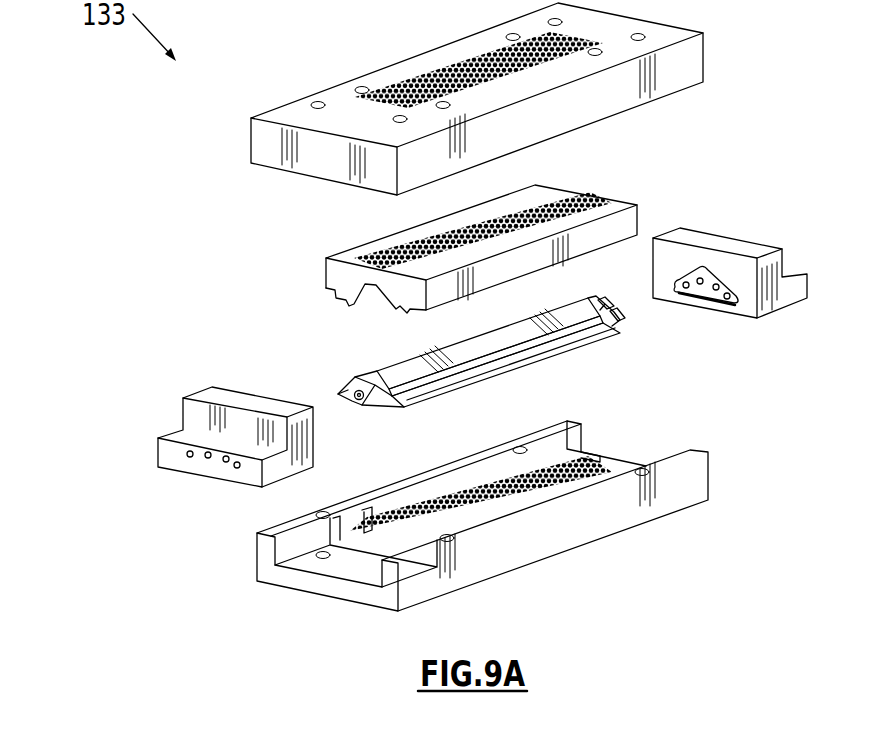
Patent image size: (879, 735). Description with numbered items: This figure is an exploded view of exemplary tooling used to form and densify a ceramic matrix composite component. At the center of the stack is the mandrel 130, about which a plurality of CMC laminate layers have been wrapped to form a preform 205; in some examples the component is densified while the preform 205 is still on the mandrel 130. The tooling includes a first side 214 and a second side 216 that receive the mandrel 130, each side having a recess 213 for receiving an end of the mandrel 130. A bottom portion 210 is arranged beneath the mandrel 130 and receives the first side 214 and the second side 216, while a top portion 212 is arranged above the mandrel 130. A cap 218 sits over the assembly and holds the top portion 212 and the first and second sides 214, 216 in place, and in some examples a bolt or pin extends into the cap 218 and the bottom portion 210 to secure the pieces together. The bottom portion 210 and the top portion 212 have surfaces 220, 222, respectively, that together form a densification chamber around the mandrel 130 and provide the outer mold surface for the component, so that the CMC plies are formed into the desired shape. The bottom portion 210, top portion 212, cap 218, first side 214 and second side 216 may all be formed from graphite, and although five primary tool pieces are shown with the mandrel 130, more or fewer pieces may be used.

The cap 218 is at (689, 67).
The top portion 212 is at (517, 258).
The surface 220 is at (392, 302).
The recess 213 is at (720, 273).
The first side 214 is at (758, 272).
The preform 205 is at (487, 379).
The mandrel 130 is at (383, 402).
The second side 216 is at (213, 467).
The surface 222 is at (580, 462).
The bottom portion 210 is at (508, 515).